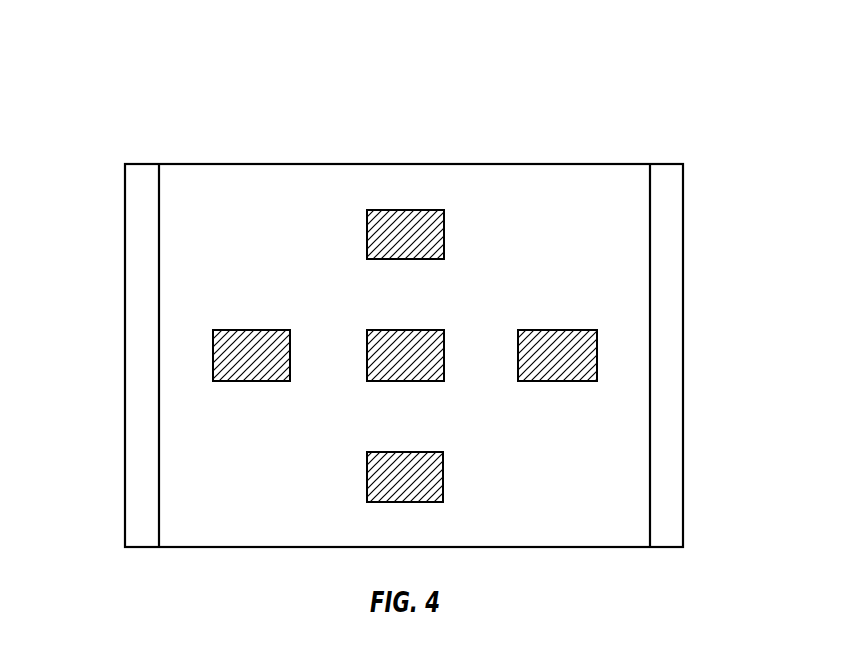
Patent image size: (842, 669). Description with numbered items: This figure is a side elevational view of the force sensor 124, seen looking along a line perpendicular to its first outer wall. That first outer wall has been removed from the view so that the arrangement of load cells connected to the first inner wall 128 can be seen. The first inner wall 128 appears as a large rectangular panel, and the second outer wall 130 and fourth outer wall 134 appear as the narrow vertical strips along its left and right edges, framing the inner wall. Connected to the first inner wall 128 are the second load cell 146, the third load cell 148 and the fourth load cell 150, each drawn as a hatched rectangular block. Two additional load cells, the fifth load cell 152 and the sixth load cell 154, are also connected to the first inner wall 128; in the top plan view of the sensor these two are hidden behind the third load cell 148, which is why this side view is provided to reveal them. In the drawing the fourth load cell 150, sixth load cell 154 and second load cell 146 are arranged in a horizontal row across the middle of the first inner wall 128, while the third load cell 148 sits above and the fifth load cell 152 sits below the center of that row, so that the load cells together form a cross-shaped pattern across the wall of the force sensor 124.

The force sensor 124 is at (128, 60).
The first inner wall 128 is at (567, 164).
The second outer wall 130 is at (125, 262).
The fourth outer wall 134 is at (683, 283).
The second load cell 146 is at (558, 330).
The third load cell 148 is at (367, 236).
The fourth load cell 150 is at (250, 330).
The fifth load cell 152 is at (367, 475).
The sixth load cell 154 is at (403, 330).